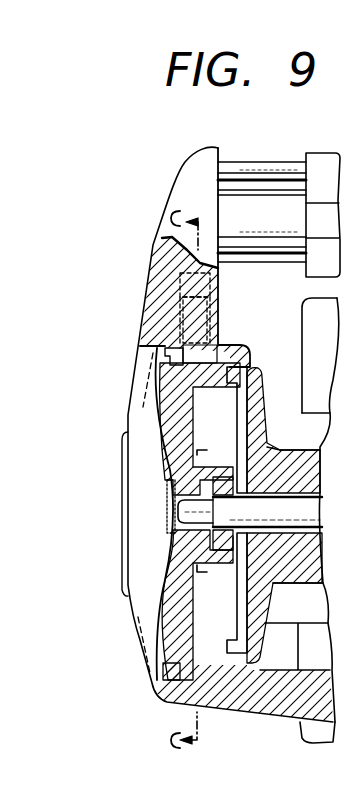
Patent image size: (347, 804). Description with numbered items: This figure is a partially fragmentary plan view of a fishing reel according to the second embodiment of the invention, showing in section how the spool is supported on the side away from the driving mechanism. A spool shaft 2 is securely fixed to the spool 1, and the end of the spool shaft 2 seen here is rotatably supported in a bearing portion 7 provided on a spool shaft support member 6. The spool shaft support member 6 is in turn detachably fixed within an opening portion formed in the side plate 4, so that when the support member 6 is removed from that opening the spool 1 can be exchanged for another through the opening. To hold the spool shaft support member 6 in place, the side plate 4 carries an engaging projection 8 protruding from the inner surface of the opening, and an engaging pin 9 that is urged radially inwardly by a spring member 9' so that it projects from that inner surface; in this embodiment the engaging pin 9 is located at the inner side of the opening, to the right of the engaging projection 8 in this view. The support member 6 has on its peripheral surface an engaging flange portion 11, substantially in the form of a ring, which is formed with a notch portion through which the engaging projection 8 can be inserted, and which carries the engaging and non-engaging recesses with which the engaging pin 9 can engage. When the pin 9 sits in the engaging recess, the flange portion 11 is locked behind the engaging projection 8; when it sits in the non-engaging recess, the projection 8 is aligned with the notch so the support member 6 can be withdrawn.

The spool 1 is at (257, 383).
The spool shaft 2 is at (317, 517).
The side plate 4 is at (182, 183).
The spool shaft support member 6 is at (127, 603).
The bearing portion 7 is at (172, 466).
The engaging projection 8 is at (163, 353).
The engaging pin 9 is at (218, 320).
The spring member 9' is at (224, 284).
The engaging flange portion 11 is at (178, 338).